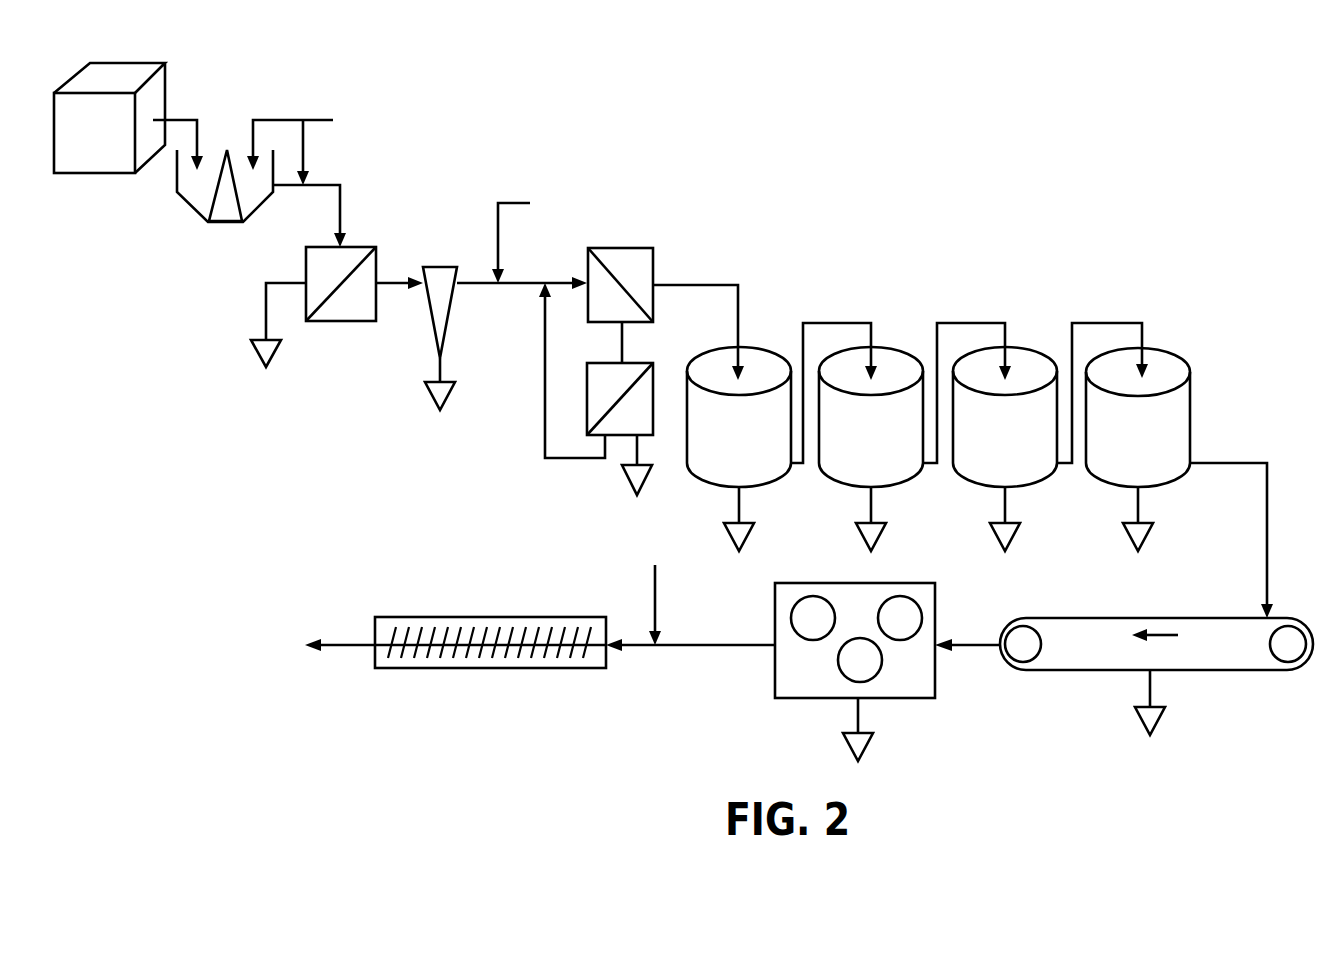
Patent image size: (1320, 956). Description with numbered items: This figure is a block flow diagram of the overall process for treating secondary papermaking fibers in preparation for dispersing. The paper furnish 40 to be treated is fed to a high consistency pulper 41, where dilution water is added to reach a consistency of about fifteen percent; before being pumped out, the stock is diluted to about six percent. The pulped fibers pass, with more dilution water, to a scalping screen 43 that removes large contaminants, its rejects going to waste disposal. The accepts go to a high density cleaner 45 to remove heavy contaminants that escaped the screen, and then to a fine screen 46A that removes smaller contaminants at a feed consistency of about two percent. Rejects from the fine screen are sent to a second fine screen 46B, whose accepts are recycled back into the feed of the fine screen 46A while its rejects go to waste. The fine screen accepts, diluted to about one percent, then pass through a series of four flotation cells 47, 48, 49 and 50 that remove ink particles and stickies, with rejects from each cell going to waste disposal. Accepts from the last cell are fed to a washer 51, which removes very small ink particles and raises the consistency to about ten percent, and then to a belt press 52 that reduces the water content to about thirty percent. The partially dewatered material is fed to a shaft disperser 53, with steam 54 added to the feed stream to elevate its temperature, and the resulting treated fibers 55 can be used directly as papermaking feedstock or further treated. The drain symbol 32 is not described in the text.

The drain / waste outlet of separator 32 is at (440, 367).
The paper furnish 40 is at (152, 98).
The high consistency pulper 41 is at (178, 193).
The scalping screen 43 is at (362, 247).
The high density cleaner 45 is at (430, 316).
The fine screen 46A is at (655, 260).
The second fine screen 46B is at (655, 418).
The flotation cell 47 is at (745, 347).
The flotation cell 48 is at (887, 347).
The flotation cell 49 is at (1015, 347).
The flotation cell 50 is at (1163, 345).
The washer 51 is at (1247, 684).
The belt press 52 is at (937, 673).
The shaft disperser 53 is at (522, 668).
The steam 54 is at (653, 583).
The treated fibers 55 is at (335, 640).